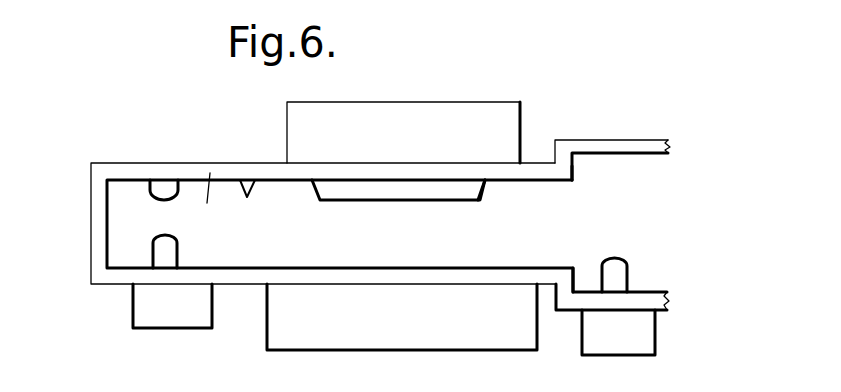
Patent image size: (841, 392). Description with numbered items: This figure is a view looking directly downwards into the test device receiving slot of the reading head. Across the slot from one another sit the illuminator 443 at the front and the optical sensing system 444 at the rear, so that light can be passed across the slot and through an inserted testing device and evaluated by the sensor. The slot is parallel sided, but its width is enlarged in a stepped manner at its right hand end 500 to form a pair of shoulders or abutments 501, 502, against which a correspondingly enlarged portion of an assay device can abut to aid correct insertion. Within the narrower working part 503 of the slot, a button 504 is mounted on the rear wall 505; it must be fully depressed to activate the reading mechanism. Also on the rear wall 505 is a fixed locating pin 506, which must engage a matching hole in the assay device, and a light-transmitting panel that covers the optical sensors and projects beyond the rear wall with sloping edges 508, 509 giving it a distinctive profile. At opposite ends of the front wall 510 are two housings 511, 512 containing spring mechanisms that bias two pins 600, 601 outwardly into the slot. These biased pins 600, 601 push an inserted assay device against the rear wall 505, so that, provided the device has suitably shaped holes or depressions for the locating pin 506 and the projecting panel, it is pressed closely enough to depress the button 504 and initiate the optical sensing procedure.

The illuminator 443 is at (403, 323).
The optical sensing system 444 is at (500, 135).
The right hand end 500 is at (640, 142).
The shoulder or abutment 501 is at (575, 278).
The shoulder or abutment 502 is at (577, 163).
The narrower working part 503 is at (273, 183).
The button 504 is at (162, 185).
The rear wall 505 is at (215, 205).
The fixed locating pin 506 is at (248, 190).
The sloping edge 508 is at (408, 190).
The sloping edge 509 is at (487, 182).
The front wall 510 is at (120, 277).
The housing 511 is at (177, 310).
The housing 512 is at (637, 330).
The biased pin 600 is at (157, 250).
The biased pin 601 is at (613, 278).